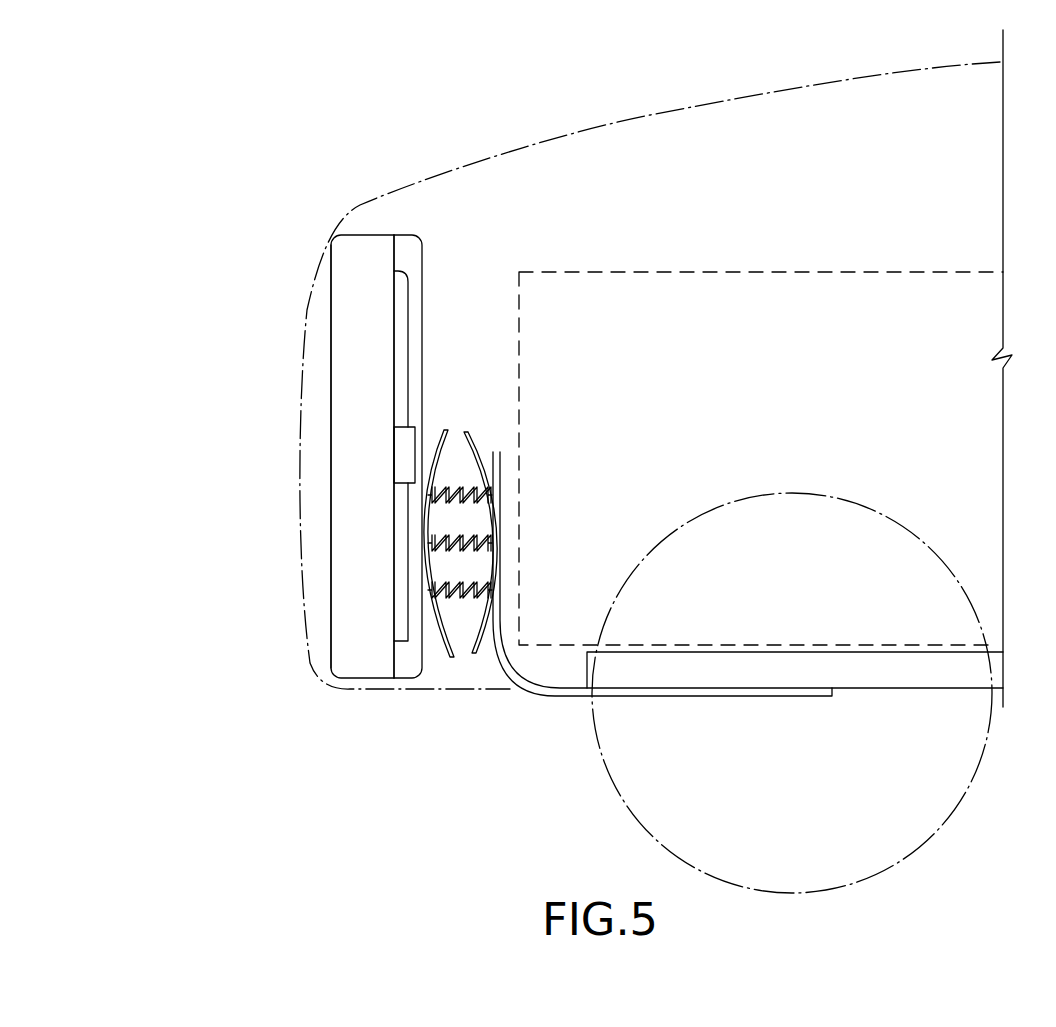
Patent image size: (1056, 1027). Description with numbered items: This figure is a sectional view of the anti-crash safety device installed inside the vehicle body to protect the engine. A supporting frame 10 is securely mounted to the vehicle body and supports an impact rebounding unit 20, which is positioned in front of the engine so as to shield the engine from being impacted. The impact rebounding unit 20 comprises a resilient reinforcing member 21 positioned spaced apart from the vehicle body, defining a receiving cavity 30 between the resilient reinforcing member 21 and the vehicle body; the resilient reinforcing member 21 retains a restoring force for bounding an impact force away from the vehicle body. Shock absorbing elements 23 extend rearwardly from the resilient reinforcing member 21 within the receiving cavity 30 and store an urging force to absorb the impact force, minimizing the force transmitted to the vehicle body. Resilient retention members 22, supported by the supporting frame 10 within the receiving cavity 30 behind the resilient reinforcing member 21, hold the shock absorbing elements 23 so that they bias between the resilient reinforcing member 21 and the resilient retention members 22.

The supporting frame 10 is at (545, 692).
The impact rebounding unit 20 is at (207, 617).
The resilient reinforcing member 21 is at (437, 625).
The resilient retention member 22 is at (470, 432).
The shock absorbing element 23 is at (492, 522).
The receiving cavity 30 is at (440, 353).